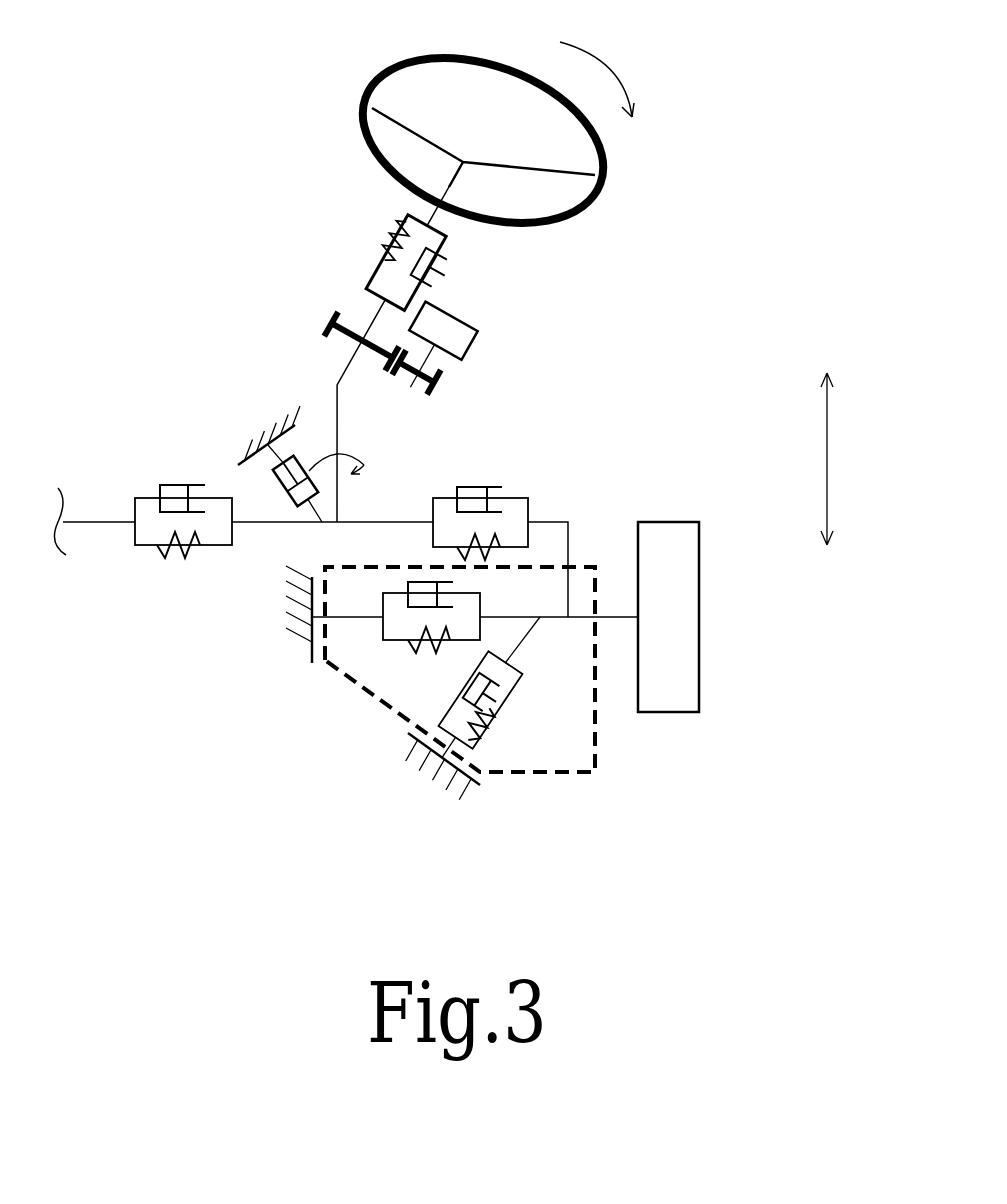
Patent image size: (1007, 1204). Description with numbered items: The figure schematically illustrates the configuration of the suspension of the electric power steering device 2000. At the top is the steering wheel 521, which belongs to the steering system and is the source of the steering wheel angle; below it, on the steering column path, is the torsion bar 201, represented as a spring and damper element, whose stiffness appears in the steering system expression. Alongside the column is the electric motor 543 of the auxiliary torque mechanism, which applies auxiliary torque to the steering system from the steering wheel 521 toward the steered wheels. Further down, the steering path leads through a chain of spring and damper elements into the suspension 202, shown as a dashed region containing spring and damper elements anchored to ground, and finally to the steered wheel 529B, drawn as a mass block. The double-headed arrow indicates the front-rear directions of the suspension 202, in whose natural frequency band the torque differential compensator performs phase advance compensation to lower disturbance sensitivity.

The electric power steering device 2000 is at (262, 98).
The steering wheel 521 is at (603, 167).
The torsion bar 201 is at (373, 270).
The electric motor 543 is at (470, 328).
The suspension 202 is at (560, 774).
The steering wheel (right front wheel) 529B is at (700, 662).